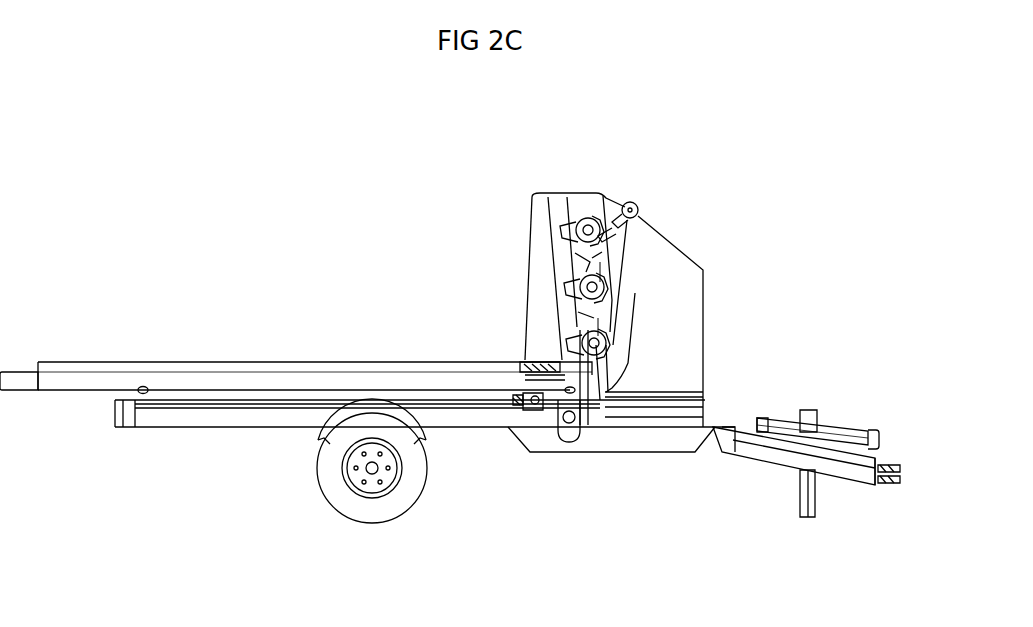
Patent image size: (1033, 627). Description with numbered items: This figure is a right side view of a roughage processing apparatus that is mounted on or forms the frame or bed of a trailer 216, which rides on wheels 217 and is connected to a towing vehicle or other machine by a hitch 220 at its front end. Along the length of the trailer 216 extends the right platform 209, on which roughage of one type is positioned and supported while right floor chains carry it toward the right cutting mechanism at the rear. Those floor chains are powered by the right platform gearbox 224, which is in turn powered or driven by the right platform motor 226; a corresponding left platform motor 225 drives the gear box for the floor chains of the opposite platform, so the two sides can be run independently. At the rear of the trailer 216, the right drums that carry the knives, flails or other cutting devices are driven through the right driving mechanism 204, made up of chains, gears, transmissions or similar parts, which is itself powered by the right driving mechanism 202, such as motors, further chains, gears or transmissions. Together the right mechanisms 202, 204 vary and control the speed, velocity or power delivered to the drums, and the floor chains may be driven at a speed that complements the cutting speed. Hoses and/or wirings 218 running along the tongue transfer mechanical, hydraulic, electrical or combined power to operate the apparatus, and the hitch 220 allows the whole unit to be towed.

The right driving mechanism 202 is at (645, 205).
The right driving mechanism 204 is at (573, 340).
The right platform 209 is at (53, 392).
The trailer 216 is at (182, 427).
The wheels 217 is at (322, 492).
The hoses and/or wirings 218 is at (827, 427).
The hitch 220 is at (880, 460).
The right platform gearbox 224 is at (543, 410).
The left platform motor 225 is at (800, 410).
The right platform motor 226 is at (502, 410).